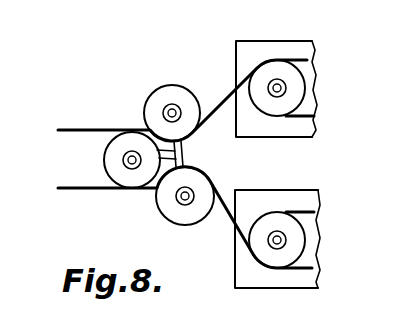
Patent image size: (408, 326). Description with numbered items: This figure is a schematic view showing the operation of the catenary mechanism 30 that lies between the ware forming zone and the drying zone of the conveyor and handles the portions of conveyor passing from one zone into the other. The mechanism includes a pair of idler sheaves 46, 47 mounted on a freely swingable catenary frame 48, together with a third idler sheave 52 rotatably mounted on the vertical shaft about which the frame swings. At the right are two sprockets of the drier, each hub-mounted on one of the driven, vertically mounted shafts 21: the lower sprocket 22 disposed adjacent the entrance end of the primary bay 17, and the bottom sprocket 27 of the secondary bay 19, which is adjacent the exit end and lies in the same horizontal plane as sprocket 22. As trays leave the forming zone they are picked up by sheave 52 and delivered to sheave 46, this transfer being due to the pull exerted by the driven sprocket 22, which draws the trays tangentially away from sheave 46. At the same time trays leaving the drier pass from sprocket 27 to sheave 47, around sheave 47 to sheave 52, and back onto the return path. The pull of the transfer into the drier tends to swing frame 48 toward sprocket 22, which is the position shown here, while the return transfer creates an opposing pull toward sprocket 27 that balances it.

The primary bay 17 is at (249, 52).
The secondary bay 19 is at (237, 246).
The shafts 21 is at (289, 90).
The lower sprocket 22 is at (279, 70).
The bottom sprocket 27 is at (269, 256).
The catenary mechanism 30 is at (136, 124).
The idler sheave 46 is at (182, 94).
The idler sheave 47 is at (167, 202).
The catenary frame 48 is at (184, 149).
The third idler sheave 52 is at (107, 156).